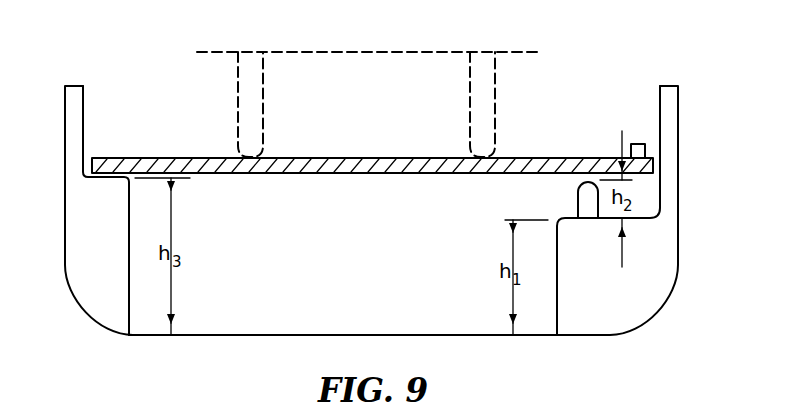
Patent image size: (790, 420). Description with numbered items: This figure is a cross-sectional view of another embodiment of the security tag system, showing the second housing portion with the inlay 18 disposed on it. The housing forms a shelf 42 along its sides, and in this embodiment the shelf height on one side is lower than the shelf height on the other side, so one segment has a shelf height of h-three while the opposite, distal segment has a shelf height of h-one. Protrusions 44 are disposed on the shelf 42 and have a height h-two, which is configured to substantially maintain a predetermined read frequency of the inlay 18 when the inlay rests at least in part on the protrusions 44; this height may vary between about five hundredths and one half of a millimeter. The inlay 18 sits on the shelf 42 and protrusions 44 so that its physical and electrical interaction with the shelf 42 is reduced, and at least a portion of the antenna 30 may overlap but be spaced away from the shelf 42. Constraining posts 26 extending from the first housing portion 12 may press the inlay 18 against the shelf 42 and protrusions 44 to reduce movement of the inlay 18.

The first housing portion 12 is at (440, 52).
The constraining post 26 is at (479, 77).
The inlay 18 is at (324, 157).
The antenna 30 is at (638, 144).
The shelf 42 is at (108, 261).
The protrusions 44 is at (578, 192).